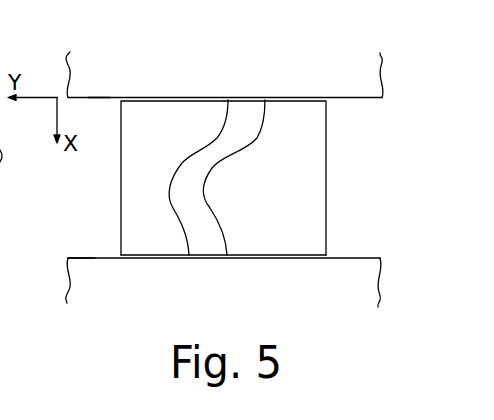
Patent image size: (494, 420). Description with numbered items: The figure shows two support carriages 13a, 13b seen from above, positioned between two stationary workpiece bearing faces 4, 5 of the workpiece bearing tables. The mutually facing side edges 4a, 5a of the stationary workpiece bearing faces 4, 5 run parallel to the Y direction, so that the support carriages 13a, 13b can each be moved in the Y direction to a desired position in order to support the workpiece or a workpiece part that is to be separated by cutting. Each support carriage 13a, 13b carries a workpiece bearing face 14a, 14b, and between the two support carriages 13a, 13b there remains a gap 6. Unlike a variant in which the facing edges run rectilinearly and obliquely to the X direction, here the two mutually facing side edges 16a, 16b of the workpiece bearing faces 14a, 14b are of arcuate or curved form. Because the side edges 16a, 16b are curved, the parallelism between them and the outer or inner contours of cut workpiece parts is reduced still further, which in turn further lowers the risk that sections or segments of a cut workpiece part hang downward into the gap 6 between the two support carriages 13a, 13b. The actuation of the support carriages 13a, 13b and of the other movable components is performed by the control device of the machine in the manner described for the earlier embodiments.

The stationary workpiece bearing face 4 is at (68, 83).
The side edge 4a is at (100, 103).
The stationary workpiece bearing face 5 is at (78, 280).
The side edge 5a is at (93, 250).
The gap 6 is at (203, 224).
The support carriage 13a is at (116, 177).
The support carriage 13b is at (337, 210).
The workpiece bearing face 14a is at (141, 237).
The workpiece bearing face 14b is at (277, 238).
The side edge 16a is at (181, 175).
The side edge 16b is at (252, 113).